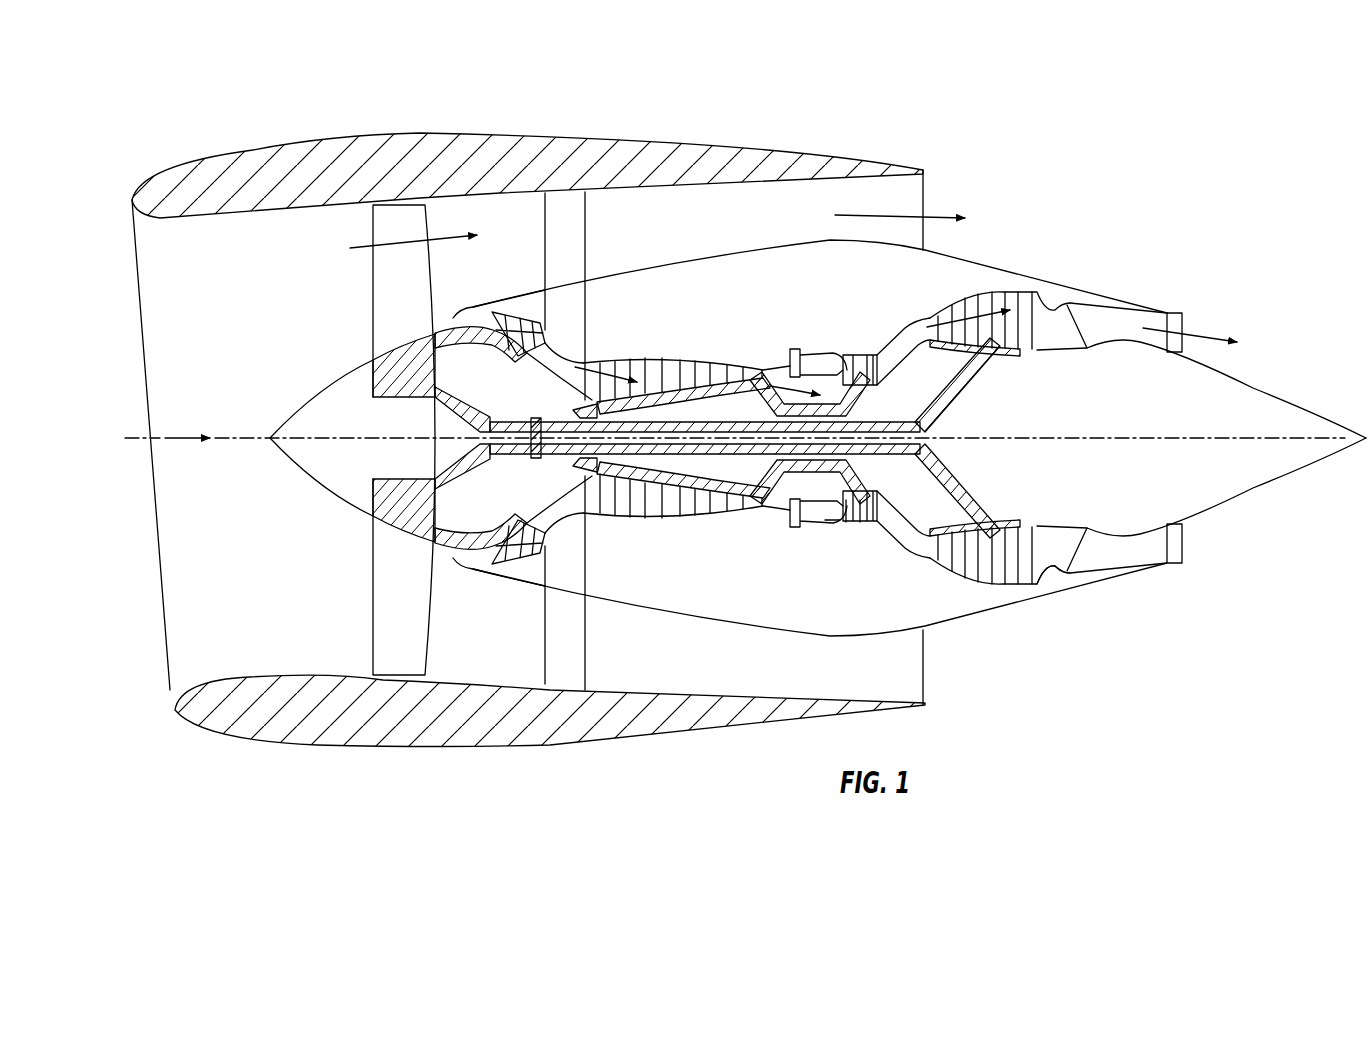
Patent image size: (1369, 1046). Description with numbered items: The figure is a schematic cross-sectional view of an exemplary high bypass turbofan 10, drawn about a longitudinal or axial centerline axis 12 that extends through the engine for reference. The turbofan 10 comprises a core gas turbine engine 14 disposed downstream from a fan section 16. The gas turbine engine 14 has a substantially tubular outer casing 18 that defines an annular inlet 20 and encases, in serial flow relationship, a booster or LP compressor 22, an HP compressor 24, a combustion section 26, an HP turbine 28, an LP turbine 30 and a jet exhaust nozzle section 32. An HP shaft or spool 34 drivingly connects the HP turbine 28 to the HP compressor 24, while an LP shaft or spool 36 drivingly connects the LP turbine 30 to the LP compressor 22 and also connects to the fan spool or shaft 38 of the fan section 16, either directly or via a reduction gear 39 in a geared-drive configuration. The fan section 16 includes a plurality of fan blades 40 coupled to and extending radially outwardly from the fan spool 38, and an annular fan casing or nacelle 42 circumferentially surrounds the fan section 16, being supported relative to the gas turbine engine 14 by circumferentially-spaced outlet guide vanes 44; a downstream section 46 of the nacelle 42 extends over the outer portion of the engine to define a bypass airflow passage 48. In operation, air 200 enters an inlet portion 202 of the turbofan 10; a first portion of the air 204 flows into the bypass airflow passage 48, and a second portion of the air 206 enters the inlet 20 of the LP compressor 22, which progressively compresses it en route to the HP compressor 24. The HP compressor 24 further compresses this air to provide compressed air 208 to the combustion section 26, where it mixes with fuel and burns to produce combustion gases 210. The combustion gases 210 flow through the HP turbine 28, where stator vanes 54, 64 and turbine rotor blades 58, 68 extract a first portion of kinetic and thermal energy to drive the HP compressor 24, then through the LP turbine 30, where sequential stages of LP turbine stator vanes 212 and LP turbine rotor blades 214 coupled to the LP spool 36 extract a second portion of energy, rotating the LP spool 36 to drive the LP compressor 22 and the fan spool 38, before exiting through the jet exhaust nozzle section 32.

The turbofan 10 is at (1087, 150).
The longitudinal or axial centerline axis 12 is at (1113, 437).
The gas turbine engine 14 is at (777, 318).
The fan section 16 is at (425, 113).
The outer casing 18 is at (765, 623).
The annular inlet 20 is at (478, 552).
The low pressure (LP) compressor 22 is at (540, 537).
The high pressure (HP) compressor 24 is at (620, 516).
The combustion section 26 is at (812, 511).
The high pressure (HP) turbine 28 is at (880, 511).
The low pressure (LP) turbine 30 is at (1022, 588).
The jet exhaust nozzle section 32 is at (1183, 327).
The high pressure (HP) shaft or spool 34 is at (865, 392).
The low pressure (LP) shaft or spool 36 is at (548, 420).
The fan spool or shaft 38 is at (430, 400).
The reduction gear 39 is at (533, 458).
The fan blades 40 is at (370, 607).
The nacelle 42 is at (425, 745).
The outlet guide vanes 44 is at (585, 223).
The downstream section 46 is at (822, 152).
The bypass airflow passage 48 is at (724, 242).
The stator vanes 54 is at (832, 525).
The turbine rotor blades 58 is at (850, 525).
The stator vanes 64 is at (862, 530).
The turbine rotor blades 68 is at (880, 530).
The air 200 is at (172, 425).
The inlet portion 202 is at (170, 690).
The first portion of the air 204 is at (393, 237).
The second portion of the air 206 is at (467, 313).
The compressed air 208 is at (790, 360).
The combustion gases 210 is at (983, 307).
The LP turbine stator vanes 212 is at (933, 307).
The LP turbine rotor blades 214 is at (940, 305).